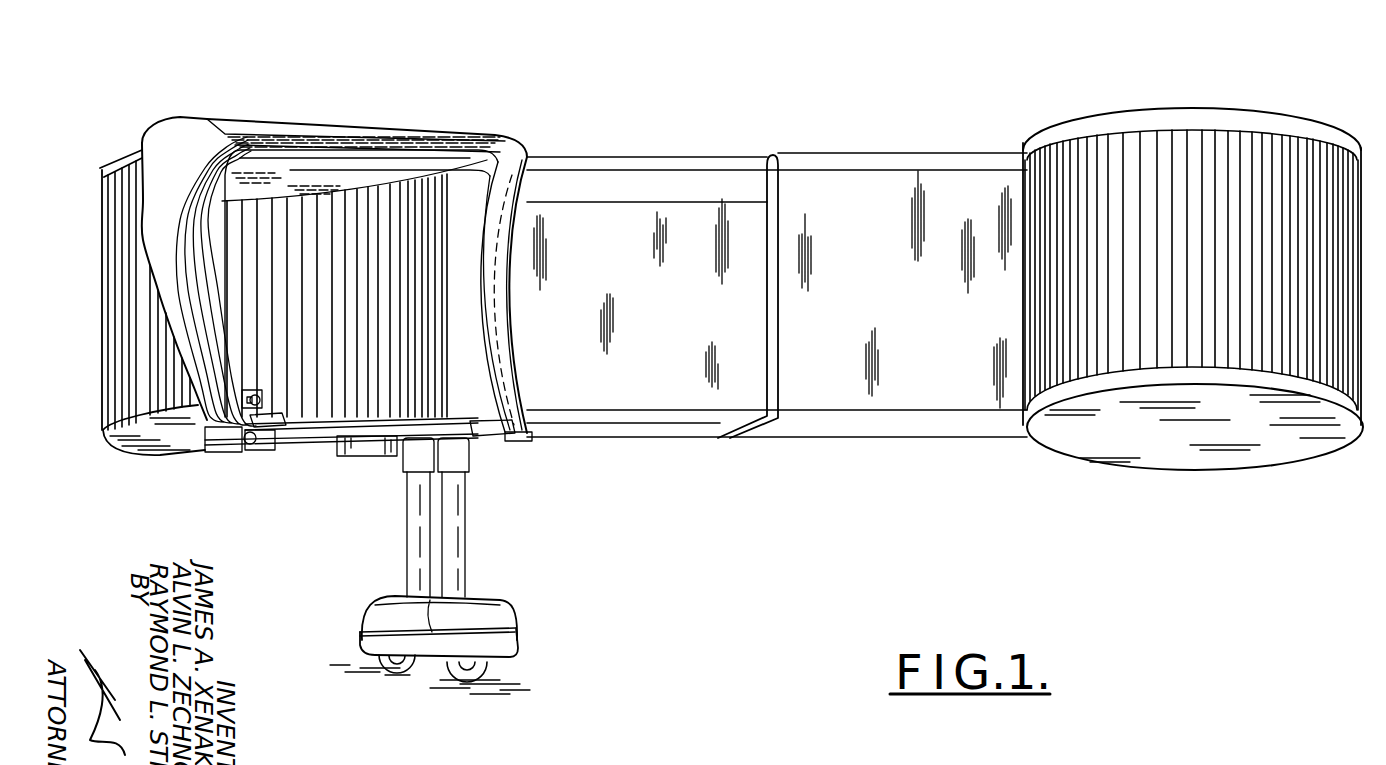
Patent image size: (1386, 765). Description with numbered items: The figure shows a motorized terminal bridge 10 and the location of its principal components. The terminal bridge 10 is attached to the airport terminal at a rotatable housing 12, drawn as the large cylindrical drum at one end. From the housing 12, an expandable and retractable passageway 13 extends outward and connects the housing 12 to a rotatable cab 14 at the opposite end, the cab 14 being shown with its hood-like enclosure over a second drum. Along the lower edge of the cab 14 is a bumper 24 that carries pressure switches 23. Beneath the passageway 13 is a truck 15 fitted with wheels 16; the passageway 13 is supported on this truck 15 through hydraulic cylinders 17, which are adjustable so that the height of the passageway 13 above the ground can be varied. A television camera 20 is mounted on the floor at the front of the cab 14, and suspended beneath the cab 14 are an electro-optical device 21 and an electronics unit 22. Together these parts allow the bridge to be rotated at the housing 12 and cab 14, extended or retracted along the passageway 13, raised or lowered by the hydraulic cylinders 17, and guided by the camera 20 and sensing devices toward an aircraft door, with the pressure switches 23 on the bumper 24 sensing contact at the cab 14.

The terminal bridge 10 is at (784, 49).
The rotatable housing 12 is at (1193, 108).
The expandable and retractable passageway 13 is at (918, 152).
The rotatable cab 14 is at (115, 148).
The truck 15 is at (512, 608).
The wheels 16 is at (500, 665).
The hydraulic cylinders 17 is at (468, 545).
The television camera 20 is at (242, 393).
The electro-optical device 21 is at (248, 447).
The electronics unit 22 is at (383, 445).
The pressure switches 23 is at (283, 432).
The bumper 24 is at (475, 447).